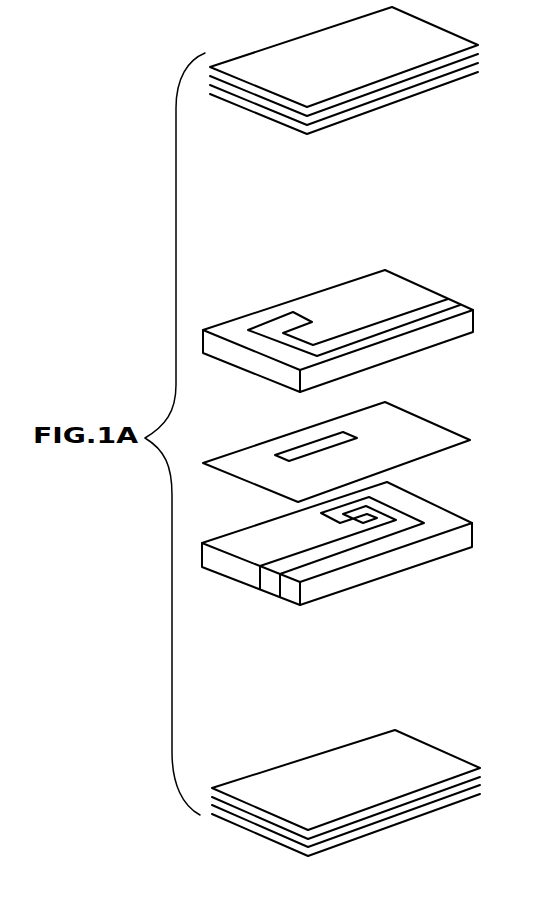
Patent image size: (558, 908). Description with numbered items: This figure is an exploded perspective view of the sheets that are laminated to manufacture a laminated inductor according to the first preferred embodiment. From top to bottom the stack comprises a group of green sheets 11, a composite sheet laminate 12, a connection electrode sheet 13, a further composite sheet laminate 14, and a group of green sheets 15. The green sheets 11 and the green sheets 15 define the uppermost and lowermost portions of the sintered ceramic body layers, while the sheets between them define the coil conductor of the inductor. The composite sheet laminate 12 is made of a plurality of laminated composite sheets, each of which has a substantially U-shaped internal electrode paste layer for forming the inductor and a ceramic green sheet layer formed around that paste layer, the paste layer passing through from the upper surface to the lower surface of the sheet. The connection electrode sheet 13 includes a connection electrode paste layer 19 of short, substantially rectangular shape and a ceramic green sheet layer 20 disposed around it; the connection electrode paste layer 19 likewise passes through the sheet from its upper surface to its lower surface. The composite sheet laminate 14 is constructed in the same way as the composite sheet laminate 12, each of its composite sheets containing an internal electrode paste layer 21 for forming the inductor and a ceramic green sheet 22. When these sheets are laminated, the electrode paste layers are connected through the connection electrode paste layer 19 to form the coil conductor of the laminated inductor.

The green sheets 11 is at (457, 33).
The composite sheet laminate 12 is at (420, 285).
The connection electrode sheet 13 is at (357, 448).
The connection electrode paste layer 19 is at (305, 450).
The ceramic green sheet layer 20 is at (438, 440).
The composite sheet laminate 14 is at (351, 557).
The internal electrode paste layer 21 is at (323, 550).
The ceramic green sheet 22 is at (387, 542).
The green sheets 15 is at (430, 745).